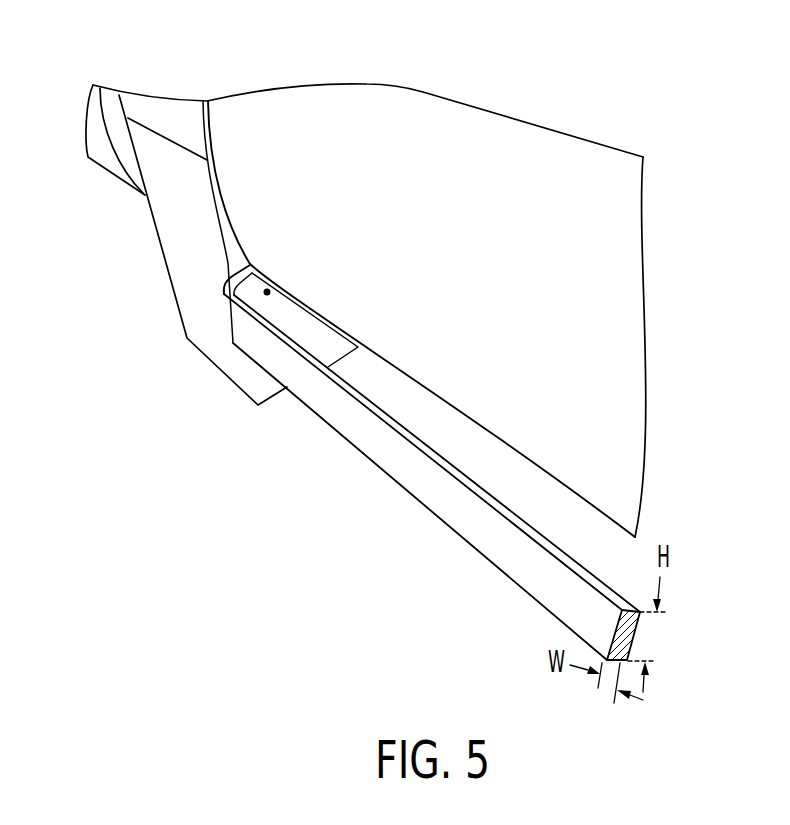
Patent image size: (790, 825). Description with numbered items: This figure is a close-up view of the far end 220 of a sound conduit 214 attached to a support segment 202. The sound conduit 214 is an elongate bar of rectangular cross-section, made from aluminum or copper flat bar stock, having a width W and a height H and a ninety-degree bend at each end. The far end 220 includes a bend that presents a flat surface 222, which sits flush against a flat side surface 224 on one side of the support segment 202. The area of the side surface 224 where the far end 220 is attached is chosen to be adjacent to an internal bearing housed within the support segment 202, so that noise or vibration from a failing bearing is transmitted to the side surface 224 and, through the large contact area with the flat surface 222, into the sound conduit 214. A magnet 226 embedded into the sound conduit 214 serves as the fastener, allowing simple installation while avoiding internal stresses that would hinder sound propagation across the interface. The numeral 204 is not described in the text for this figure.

The support segment 202 is at (167, 112).
The panel 204 is at (92, 83).
The sound conduit 214 is at (530, 580).
The far end 220 is at (200, 283).
The flat surface 222 is at (232, 262).
The side surface 224 is at (221, 205).
The magnet 226 is at (267, 295).